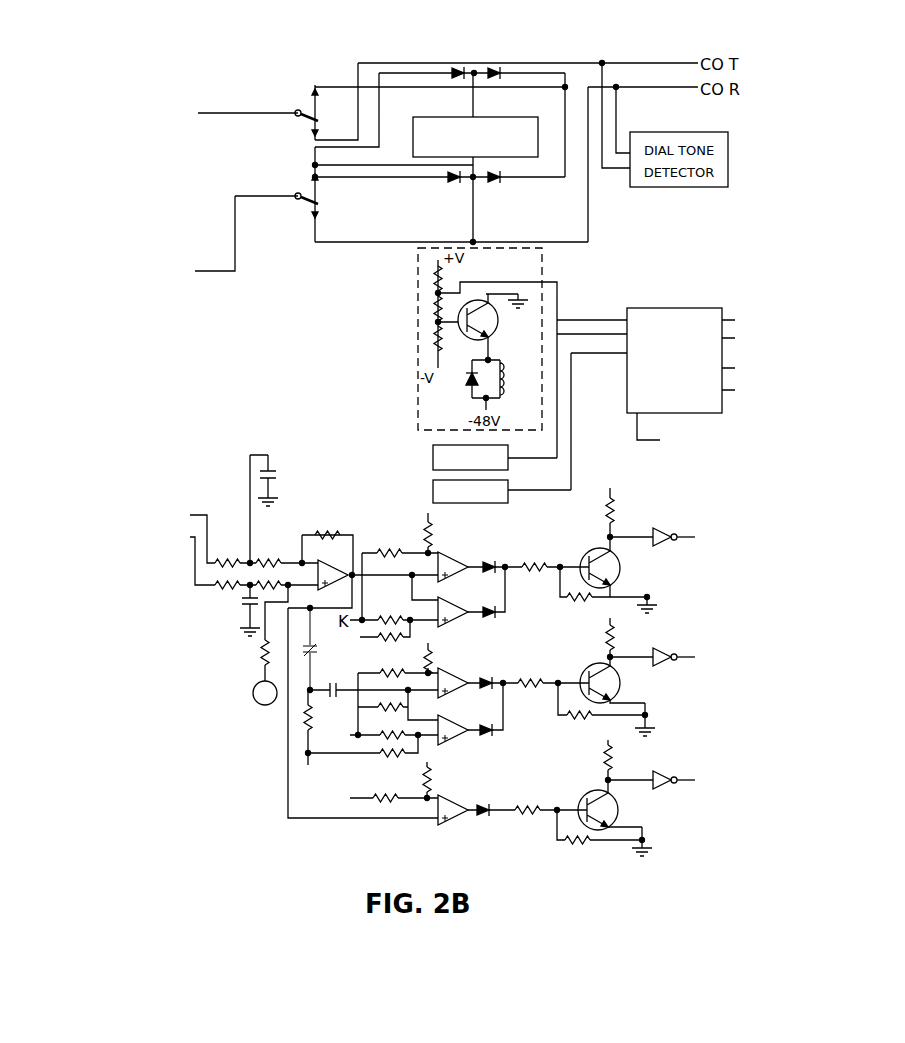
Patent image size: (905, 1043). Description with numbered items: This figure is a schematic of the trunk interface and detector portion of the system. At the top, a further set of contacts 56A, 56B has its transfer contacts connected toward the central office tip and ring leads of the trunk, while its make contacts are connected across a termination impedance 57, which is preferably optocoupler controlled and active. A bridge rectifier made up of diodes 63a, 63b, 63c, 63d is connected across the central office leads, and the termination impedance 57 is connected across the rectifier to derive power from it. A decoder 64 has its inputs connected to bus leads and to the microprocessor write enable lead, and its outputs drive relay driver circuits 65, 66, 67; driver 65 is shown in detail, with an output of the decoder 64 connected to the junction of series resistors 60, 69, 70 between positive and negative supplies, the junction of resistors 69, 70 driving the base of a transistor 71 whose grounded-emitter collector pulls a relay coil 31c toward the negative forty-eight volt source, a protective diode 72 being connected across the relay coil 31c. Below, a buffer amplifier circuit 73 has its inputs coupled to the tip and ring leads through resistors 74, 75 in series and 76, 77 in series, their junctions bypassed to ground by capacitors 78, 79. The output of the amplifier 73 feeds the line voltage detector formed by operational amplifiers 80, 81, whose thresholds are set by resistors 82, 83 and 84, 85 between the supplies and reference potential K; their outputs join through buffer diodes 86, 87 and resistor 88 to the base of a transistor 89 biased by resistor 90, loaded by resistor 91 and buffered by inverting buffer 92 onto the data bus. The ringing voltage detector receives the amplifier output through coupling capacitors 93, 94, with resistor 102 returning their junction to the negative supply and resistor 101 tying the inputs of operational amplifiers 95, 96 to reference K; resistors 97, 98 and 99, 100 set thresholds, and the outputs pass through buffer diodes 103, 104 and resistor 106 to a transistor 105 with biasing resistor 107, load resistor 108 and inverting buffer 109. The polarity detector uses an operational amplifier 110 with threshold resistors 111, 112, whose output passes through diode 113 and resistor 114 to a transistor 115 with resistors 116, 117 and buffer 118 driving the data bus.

The contacts 56A is at (298, 110).
The contacts 56B is at (298, 194).
The diode 63a is at (454, 67).
The diode 63b is at (500, 68).
The diode 63c is at (464, 182).
The diode 63d is at (496, 183).
The termination impedance 57 is at (540, 130).
The resistor 60 is at (422, 288).
The relay driver circuit 65 is at (417, 298).
The resistor 69 is at (431, 312).
The resistor 70 is at (434, 349).
The transistor 71 is at (492, 335).
The protective diode 72 is at (464, 391).
The relay coil 31c is at (506, 392).
The decoder 64 is at (666, 308).
The relay driver circuit 66 is at (433, 462).
The relay driver circuit 67 is at (433, 490).
The capacitor 78 is at (276, 474).
The resistor 74 is at (234, 563).
The resistor 75 is at (288, 564).
The resistor 76 is at (220, 598).
The capacitor 79 is at (244, 622).
The resistor 77 is at (290, 588).
The buffer amplifier circuit 73 is at (363, 674).
The resistor 82 is at (433, 544).
The resistor 83 is at (418, 551).
The resistor 84 is at (394, 611).
The resistor 85 is at (383, 639).
The operational amplifier 80 is at (464, 564).
The operational amplifier 81 is at (451, 621).
The buffer diode 86 is at (489, 574).
The buffer diode 87 is at (495, 615).
The resistor 88 is at (534, 554).
The transistor 89 is at (598, 554).
The biasing resistor 90 is at (598, 604).
The resistor 91 is at (618, 504).
The inverting buffer 92 is at (672, 519).
The coupling capacitor 93 is at (336, 641).
The coupling capacitor 94 is at (341, 685).
The operational amplifier 95 is at (470, 673).
The operational amplifier 96 is at (444, 743).
The resistor 97 is at (438, 651).
The resistor 98 is at (398, 690).
The resistor 99 is at (375, 752).
The resistor 100 is at (393, 758).
The resistor 101 is at (391, 711).
The resistor 102 is at (313, 709).
The buffer diode 103 is at (500, 679).
The buffer diode 104 is at (484, 709).
The transistor 105 is at (585, 679).
The resistor 106 is at (543, 689).
The biasing resistor 107 is at (580, 721).
The resistor 108 is at (624, 630).
The inverting buffer 109 is at (665, 649).
The operational amplifier 110 is at (465, 803).
The resistor 111 is at (445, 773).
The resistor 112 is at (381, 811).
The diode 113 is at (486, 804).
The resistor 114 is at (529, 805).
The transistor 115 is at (593, 798).
The resistor 116 is at (555, 842).
The resistor 117 is at (612, 772).
The buffer 118 is at (670, 776).